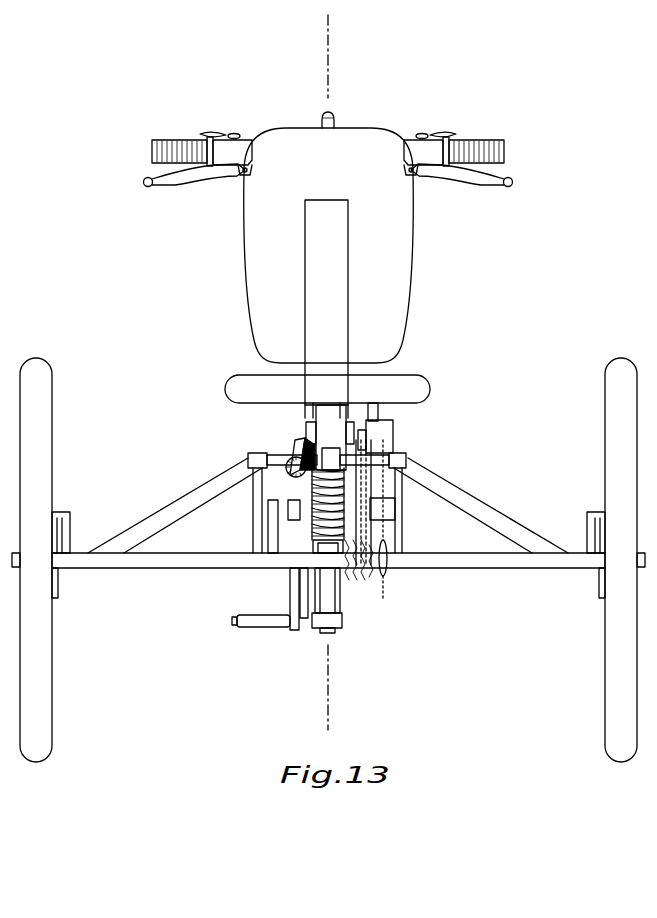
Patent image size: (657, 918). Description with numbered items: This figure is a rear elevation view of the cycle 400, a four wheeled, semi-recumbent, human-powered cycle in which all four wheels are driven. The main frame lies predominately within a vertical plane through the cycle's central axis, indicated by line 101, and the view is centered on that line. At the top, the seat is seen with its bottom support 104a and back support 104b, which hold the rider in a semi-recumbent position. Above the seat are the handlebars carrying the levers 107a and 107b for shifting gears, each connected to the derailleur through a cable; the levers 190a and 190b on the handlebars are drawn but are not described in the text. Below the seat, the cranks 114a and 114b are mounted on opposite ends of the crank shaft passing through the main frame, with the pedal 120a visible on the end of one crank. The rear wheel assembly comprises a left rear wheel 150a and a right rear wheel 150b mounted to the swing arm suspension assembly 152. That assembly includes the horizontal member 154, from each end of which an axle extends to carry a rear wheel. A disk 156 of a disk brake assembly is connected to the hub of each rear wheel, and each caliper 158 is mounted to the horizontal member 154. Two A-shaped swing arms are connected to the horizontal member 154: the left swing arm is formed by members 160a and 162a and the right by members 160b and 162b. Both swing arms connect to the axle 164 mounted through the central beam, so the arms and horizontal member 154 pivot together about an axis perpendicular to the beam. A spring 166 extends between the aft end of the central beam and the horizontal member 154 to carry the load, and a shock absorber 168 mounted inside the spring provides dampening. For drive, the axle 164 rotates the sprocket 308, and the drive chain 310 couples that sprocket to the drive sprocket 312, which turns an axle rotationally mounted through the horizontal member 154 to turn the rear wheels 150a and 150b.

The central axis line 101 is at (332, 56).
The cycle 400 is at (139, 290).
The bottom support 104a is at (228, 392).
The back support 104b is at (243, 322).
The gear shifting lever 107a is at (216, 132).
The gear shifting lever 107b is at (440, 132).
The left brake lever 190a is at (172, 187).
The right brake lever 190b is at (484, 187).
The crank 114a is at (290, 596).
The crank 114b is at (380, 412).
The pedal 120a is at (265, 628).
The left rear wheel 150a is at (52, 710).
The right rear wheel 150b is at (605, 710).
The swing arm suspension assembly 152 is at (480, 458).
The horizontal member 154 is at (184, 569).
The disk 156 is at (58, 598).
The caliper 158 is at (58, 512).
The swing arm member 160a is at (196, 500).
The swing arm member 160b is at (460, 498).
The swing arm member 162a is at (252, 490).
The swing arm member 162b is at (405, 492).
The axle 164 is at (298, 455).
The spring 166 is at (377, 533).
The shock absorber 168 is at (308, 528).
The sprocket 308 is at (396, 431).
The drive chain 310 is at (390, 510).
The drive sprocket 312 is at (384, 577).